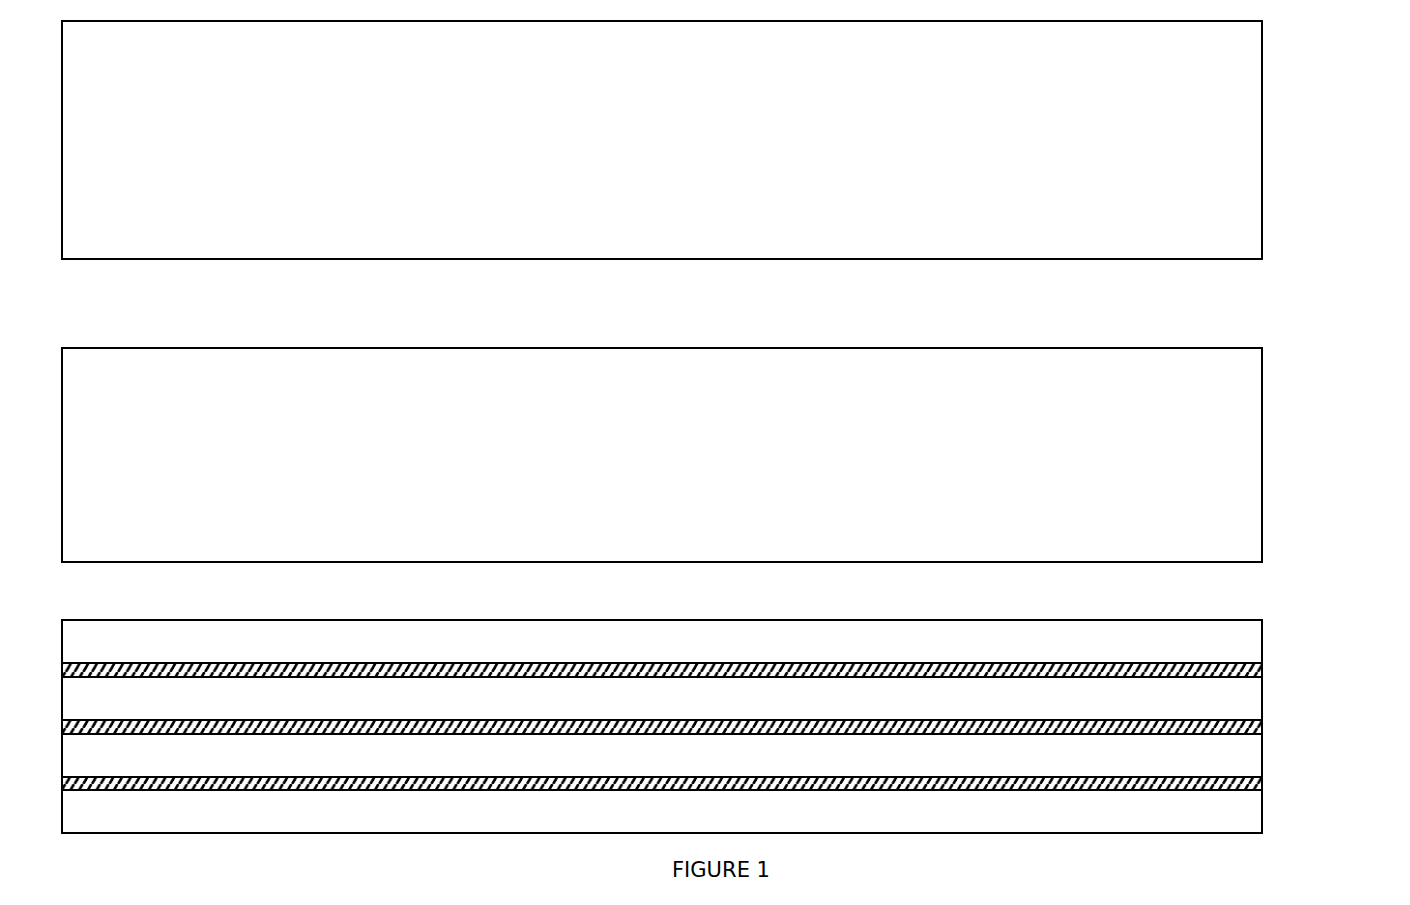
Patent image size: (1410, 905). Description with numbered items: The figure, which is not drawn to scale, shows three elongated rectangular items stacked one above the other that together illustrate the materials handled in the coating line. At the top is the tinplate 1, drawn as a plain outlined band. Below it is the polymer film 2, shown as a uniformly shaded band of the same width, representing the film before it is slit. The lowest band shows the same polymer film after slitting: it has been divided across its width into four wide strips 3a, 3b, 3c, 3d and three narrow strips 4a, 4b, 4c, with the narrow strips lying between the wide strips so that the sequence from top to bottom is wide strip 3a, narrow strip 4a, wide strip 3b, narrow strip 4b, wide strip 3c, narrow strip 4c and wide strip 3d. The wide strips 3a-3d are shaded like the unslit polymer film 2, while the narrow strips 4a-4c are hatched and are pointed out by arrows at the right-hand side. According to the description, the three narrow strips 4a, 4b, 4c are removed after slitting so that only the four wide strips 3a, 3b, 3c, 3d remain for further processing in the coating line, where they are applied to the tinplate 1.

The tinplate 1 is at (653, 157).
The polymer film 2 is at (653, 471).
The wide strip 3a is at (646, 657).
The wide strip 3b is at (646, 715).
The wide strip 3c is at (646, 770).
The wide strip 3d is at (646, 828).
The narrow strip 4a is at (1262, 673).
The narrow strip 4b is at (1262, 728).
The narrow strip 4c is at (1262, 784).